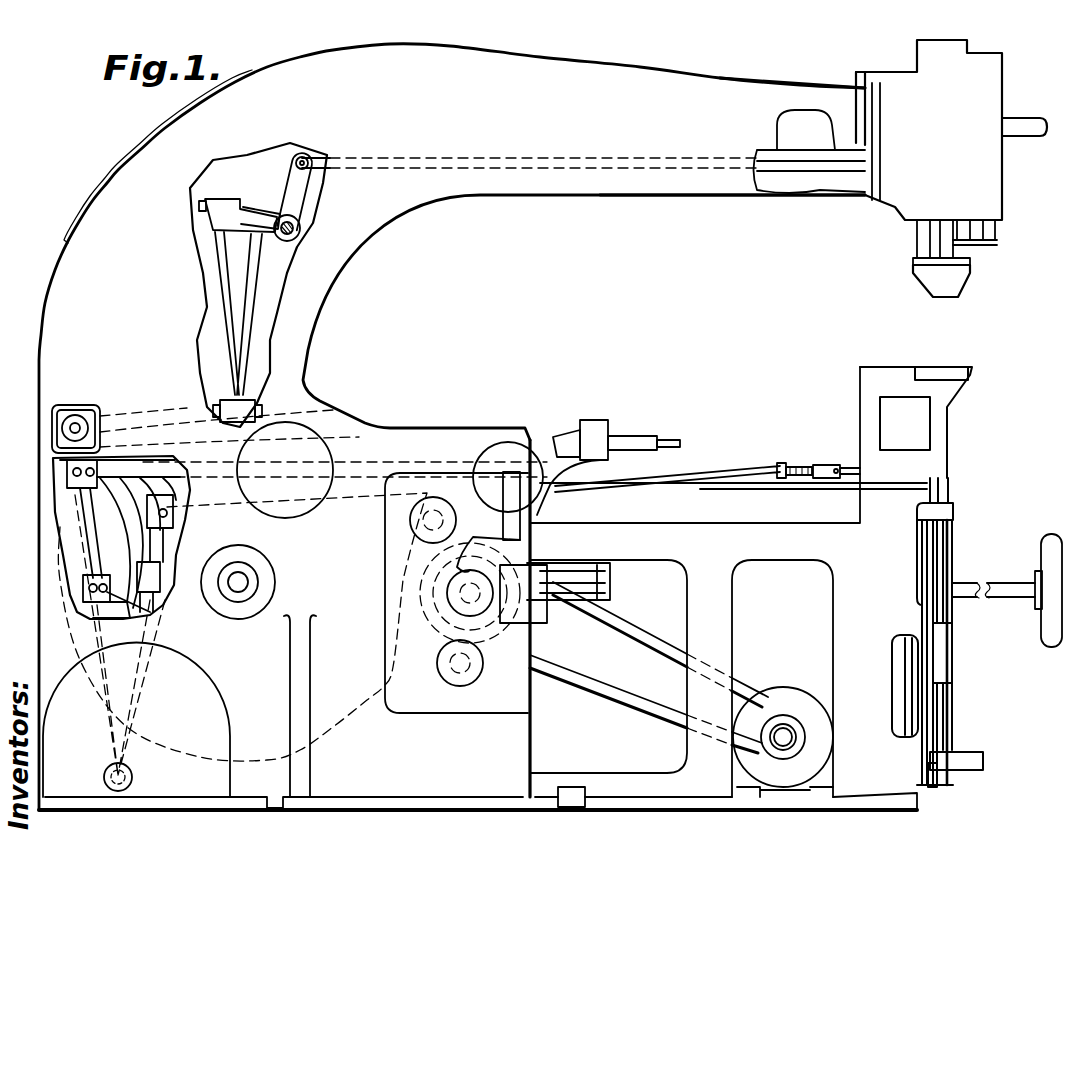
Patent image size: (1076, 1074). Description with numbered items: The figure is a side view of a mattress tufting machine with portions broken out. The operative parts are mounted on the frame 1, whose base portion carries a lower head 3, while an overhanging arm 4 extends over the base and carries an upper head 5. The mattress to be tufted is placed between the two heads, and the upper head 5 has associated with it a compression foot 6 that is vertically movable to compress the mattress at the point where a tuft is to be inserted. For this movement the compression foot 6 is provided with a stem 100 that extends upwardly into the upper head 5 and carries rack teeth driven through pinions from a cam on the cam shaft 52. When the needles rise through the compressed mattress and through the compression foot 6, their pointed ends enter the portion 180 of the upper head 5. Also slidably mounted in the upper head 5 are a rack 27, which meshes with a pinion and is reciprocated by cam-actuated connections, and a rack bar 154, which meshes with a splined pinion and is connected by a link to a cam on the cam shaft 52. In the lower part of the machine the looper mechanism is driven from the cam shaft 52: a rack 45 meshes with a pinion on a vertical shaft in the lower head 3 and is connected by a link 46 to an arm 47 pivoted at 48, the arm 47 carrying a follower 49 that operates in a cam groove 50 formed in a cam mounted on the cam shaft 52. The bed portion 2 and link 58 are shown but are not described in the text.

The frame 1 is at (307, 307).
The bed plate 2 is at (818, 530).
The lower head 3 is at (940, 390).
The overhanging arm 4 is at (690, 183).
The upper head 5 is at (993, 187).
The compression foot 6 is at (930, 277).
The rack 27 is at (852, 163).
The rack 45 is at (857, 463).
The link 46 is at (688, 468).
The arm 47 is at (83, 552).
The pivot 48 is at (108, 775).
The follower 49 is at (110, 594).
The cam groove 50 is at (107, 535).
The cam shaft 52 is at (243, 580).
The link rod 58 is at (93, 572).
The stem 100 is at (927, 238).
The rack bar 154 is at (866, 177).
The portion of the upper head 180 is at (1000, 242).